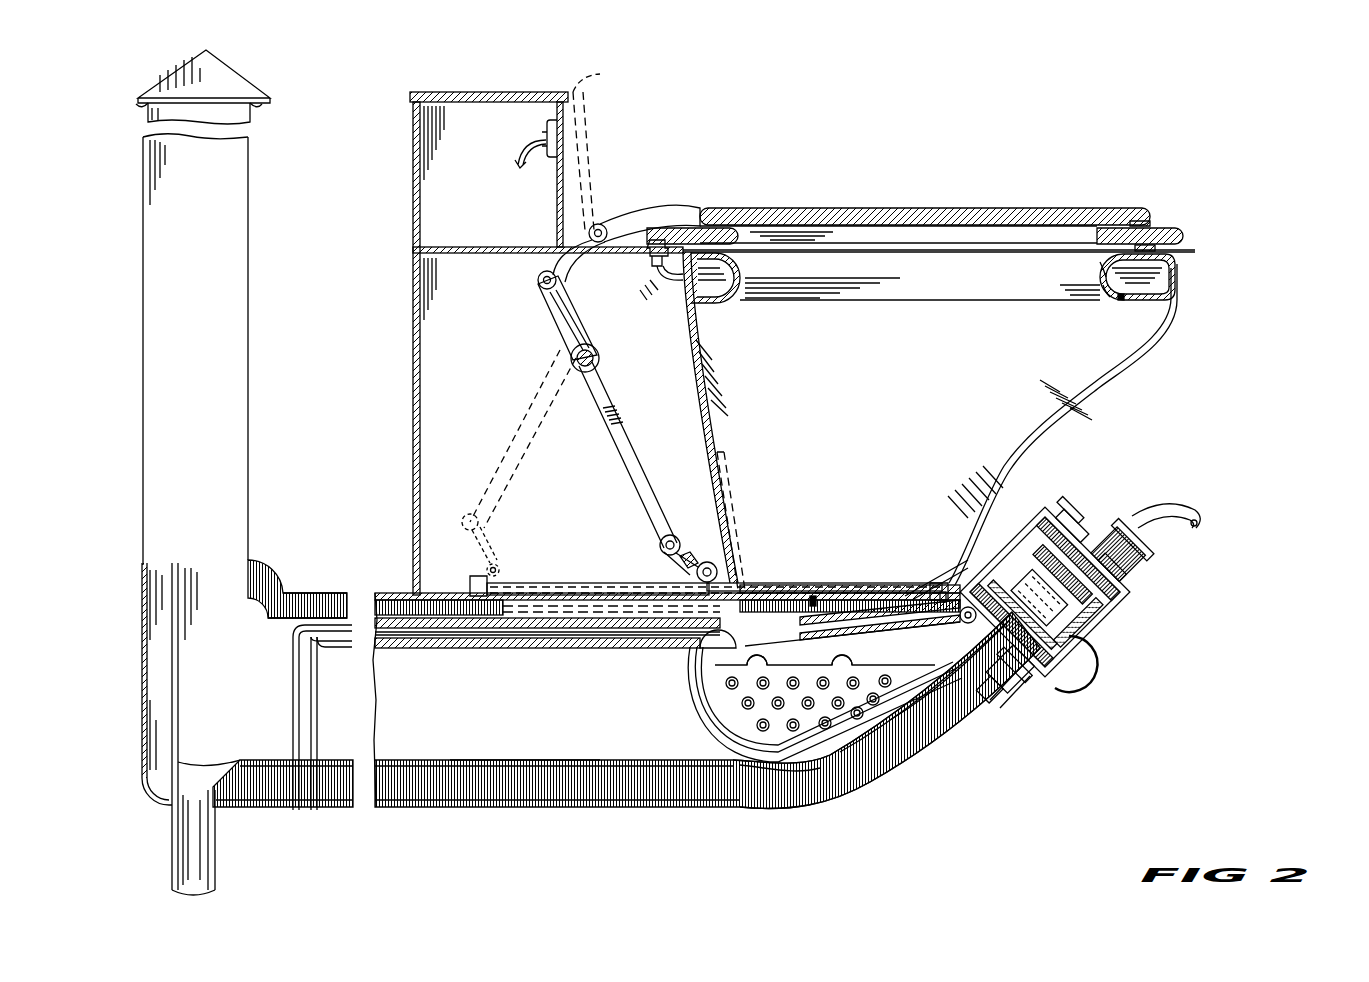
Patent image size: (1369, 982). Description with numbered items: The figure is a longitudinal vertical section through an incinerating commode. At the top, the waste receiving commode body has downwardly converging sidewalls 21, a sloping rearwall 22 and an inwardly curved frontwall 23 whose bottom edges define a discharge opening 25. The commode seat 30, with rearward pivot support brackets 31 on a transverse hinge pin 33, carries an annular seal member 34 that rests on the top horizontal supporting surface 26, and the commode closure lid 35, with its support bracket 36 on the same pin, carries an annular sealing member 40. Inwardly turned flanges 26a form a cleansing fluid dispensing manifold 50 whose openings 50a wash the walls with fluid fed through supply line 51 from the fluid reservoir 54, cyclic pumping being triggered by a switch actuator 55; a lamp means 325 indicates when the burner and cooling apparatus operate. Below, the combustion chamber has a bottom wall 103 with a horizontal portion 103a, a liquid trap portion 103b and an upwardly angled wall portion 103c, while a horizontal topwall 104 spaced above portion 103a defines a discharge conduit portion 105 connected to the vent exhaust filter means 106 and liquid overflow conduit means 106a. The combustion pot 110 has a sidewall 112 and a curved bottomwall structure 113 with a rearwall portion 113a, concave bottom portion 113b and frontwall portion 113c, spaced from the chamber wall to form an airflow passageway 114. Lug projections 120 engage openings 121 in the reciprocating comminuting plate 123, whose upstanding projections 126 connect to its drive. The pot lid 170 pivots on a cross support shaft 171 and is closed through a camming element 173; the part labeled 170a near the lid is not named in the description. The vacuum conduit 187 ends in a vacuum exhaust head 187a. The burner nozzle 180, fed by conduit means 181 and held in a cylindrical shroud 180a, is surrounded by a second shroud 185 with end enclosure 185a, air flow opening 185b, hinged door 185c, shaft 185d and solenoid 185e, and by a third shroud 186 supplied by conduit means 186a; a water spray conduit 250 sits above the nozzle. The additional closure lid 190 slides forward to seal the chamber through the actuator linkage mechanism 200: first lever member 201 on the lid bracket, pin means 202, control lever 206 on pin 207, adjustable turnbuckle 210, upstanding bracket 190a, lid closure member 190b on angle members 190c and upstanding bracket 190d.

The sidewalls 21 is at (900, 433).
The rearwall 22 is at (714, 408).
The frontwall 23 is at (1100, 394).
The discharge opening 25 is at (808, 502).
The top horizontal supporting surface 26 is at (1180, 266).
The downwardly, inwardly turned flanges 26a is at (1101, 262).
The commode seat 30 is at (1166, 232).
The pivot support brackets 31 is at (683, 226).
The transverse hinge pin 33 is at (601, 224).
The annular seal member 34 is at (1160, 253).
The commode closure lid 35 is at (597, 103).
The support bracket 36 is at (634, 222).
The annular sealing member 40 is at (1142, 222).
The cleansing fluid dispensing manifold 50 is at (1101, 298).
The openings 50a is at (1121, 302).
The supply line 51 is at (650, 303).
The fluid reservoir 54 is at (442, 213).
The switch actuator 55 is at (566, 136).
The bottom wall 103 is at (926, 762).
The horizontal portion 103a is at (598, 772).
The liquid trap portion 103b is at (748, 792).
The upwardly angled wall portion 103c is at (905, 792).
The horizontal topwall 104 is at (540, 624).
The discharge conduit portion 105 is at (264, 606).
The vent exhaust filter means 106 is at (250, 420).
The liquid overflow conduit means 106a is at (216, 862).
The combustion pot 110 is at (1004, 702).
The sidewall 112 is at (700, 676).
The curved bottomwall structure 113 is at (812, 782).
The rearwall portion 113a is at (703, 700).
The concave bottom portion 113b is at (726, 760).
The frontwall portion 113c is at (968, 722).
The airflow passageway 114 is at (861, 782).
The lug projections 120 is at (788, 730).
The openings 121 is at (744, 708).
The comminuting plate 123 is at (866, 640).
The upstanding projections 126 is at (769, 660).
The lid 170 is at (731, 483).
The rod end 170a is at (823, 598).
The cross support shaft 171 is at (771, 600).
The camming element 173 is at (907, 580).
The burner nozzle 180 is at (1037, 650).
The cylindrical shroud 180a is at (1032, 683).
The conduit means 181 is at (1083, 674).
The second shroud 185 is at (1102, 612).
The end enclosure 185a is at (1120, 593).
The air flow opening 185b is at (1110, 571).
The hinged door 185c is at (1077, 500).
The shaft 185d is at (1061, 512).
The solenoid 185e is at (1047, 514).
The third shroud 186 is at (1081, 516).
The conduit means 186a is at (1152, 512).
The vacuum conduit 187 is at (466, 650).
The vacuum exhaust head 187a is at (708, 652).
The additional closure lid 190 is at (892, 584).
The upstanding bracket 190a is at (702, 588).
The lid closure member 190b is at (796, 585).
The angle members 190c is at (586, 584).
The upstanding bracket 190d is at (936, 600).
The actuator linkage mechanism 200 is at (560, 336).
The first lever member 201 is at (574, 264).
The pin means 202 is at (544, 290).
The control lever 206 is at (628, 475).
The pin 207 is at (597, 362).
The adjustable turnbuckle 210 is at (702, 560).
The water spray conduit 250 is at (962, 592).
The lamp means 325 is at (566, 150).